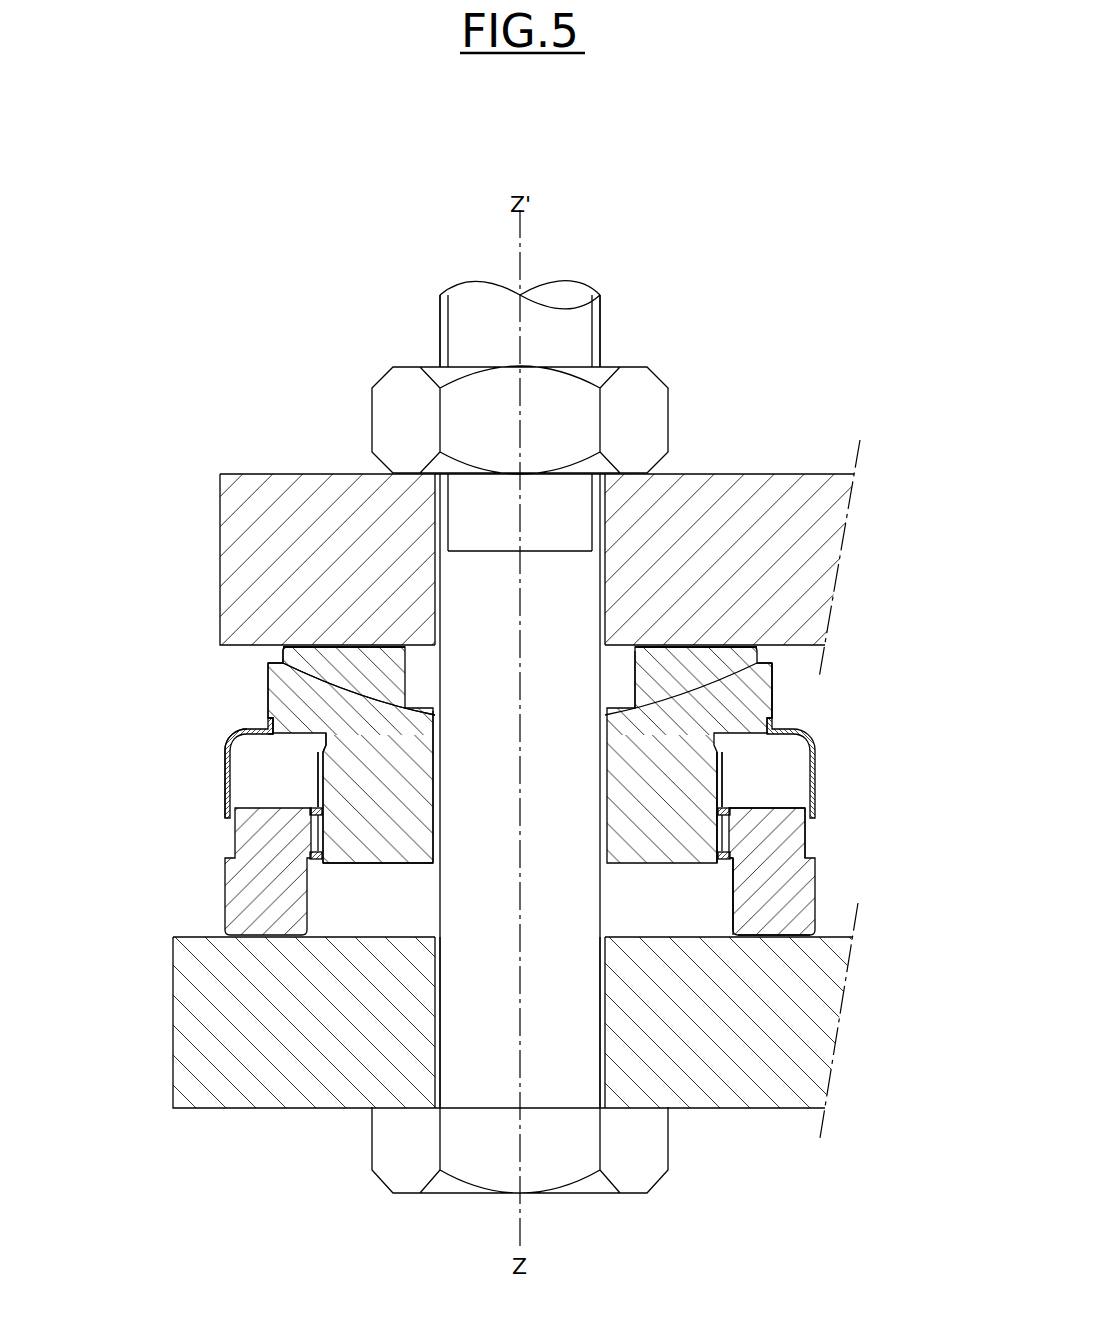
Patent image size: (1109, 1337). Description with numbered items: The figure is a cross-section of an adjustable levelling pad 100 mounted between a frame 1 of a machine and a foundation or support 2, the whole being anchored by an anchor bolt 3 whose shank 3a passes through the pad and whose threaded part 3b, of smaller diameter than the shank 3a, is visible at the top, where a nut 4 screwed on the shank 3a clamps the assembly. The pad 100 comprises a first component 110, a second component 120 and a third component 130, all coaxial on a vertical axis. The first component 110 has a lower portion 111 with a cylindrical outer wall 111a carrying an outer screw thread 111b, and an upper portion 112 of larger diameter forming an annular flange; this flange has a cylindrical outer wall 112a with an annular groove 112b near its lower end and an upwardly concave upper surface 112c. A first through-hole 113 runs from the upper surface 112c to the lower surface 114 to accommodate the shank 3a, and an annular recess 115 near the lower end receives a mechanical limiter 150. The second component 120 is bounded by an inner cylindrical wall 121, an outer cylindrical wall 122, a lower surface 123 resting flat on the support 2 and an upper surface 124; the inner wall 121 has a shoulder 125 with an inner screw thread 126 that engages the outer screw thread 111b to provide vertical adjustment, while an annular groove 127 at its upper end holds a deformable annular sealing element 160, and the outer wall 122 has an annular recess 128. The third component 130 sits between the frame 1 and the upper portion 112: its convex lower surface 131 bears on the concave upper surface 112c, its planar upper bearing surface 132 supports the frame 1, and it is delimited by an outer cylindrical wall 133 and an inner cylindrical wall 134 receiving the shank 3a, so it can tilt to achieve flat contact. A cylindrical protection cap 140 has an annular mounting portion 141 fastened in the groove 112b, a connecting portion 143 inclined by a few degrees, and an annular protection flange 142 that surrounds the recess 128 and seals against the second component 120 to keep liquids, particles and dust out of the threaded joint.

The frame 1 is at (223, 567).
The foundation or support 2 is at (176, 1046).
The anchor bolt 3 is at (421, 1203).
The shank 3a is at (560, 1053).
The threaded part 3b is at (602, 323).
The nut 4 is at (400, 367).
The adjustable levelling pad 100 is at (880, 813).
The first component 110 is at (256, 705).
The lower portion 111 is at (343, 837).
The cylindrical outer wall 111a is at (725, 755).
The outer screw thread 111b is at (725, 772).
The upper portion 112 is at (275, 675).
The cylindrical outer wall 112a is at (775, 690).
The annular groove 112b is at (775, 719).
The upper surface 112c is at (756, 662).
The first through-hole 113 is at (442, 818).
The lower surface 114 is at (380, 865).
The recess 115 is at (310, 862).
The second component 120 is at (213, 877).
The inner cylindrical wall 121 is at (735, 929).
The outer cylindrical wall 122 is at (733, 926).
The lower surface 123 is at (778, 938).
The upper surface 124 is at (745, 803).
The shoulder 125 is at (717, 853).
The inner screw thread 126 is at (735, 864).
The annular groove 127 is at (312, 808).
The annular recess 128 is at (806, 843).
The third component 130 is at (262, 655).
The lower surface 131 is at (378, 712).
The upper bearing surface 132 is at (336, 700).
The outer cylindrical wall 133 is at (283, 655).
The inner cylindrical wall 134 is at (636, 672).
The protection cap 140 is at (828, 748).
The annular mounting portion 141 is at (262, 730).
The annular protection flange 142 is at (222, 757).
The connecting portion 143 is at (240, 731).
The mechanical limiter 150 is at (318, 858).
The annular sealing element 160 is at (320, 803).